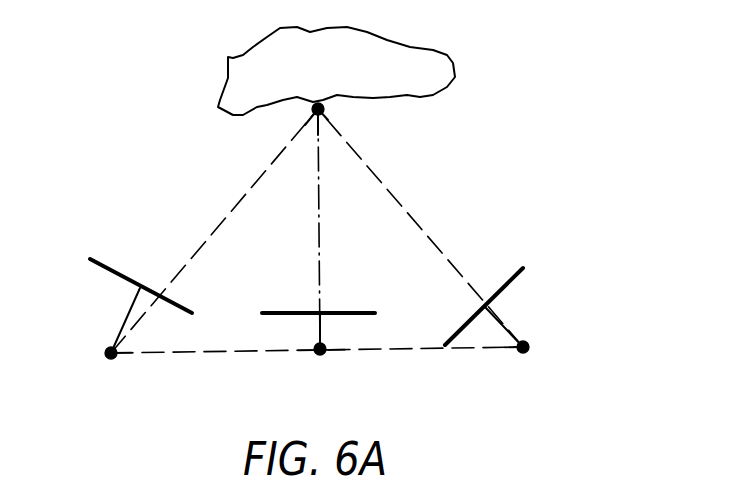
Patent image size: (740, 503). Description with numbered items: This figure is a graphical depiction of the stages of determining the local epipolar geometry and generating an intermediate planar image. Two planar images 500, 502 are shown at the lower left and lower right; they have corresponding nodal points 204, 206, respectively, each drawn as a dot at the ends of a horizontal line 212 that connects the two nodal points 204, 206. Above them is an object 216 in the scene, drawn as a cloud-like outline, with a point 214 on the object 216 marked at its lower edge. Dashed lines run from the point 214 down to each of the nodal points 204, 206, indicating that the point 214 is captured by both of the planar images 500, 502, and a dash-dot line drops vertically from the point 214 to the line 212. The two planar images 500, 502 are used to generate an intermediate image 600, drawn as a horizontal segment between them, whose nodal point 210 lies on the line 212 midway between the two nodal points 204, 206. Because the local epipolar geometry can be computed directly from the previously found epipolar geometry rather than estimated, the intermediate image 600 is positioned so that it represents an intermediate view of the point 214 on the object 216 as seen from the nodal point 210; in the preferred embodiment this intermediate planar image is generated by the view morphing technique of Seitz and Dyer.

The nodal point 204 is at (105, 357).
The nodal point 206 is at (523, 347).
The nodal point 210 is at (320, 349).
The line 212 is at (217, 353).
The point 214 is at (313, 100).
The object 216 is at (413, 53).
The planar image 500 is at (110, 265).
The planar image 502 is at (505, 277).
The intermediate image 600 is at (347, 312).